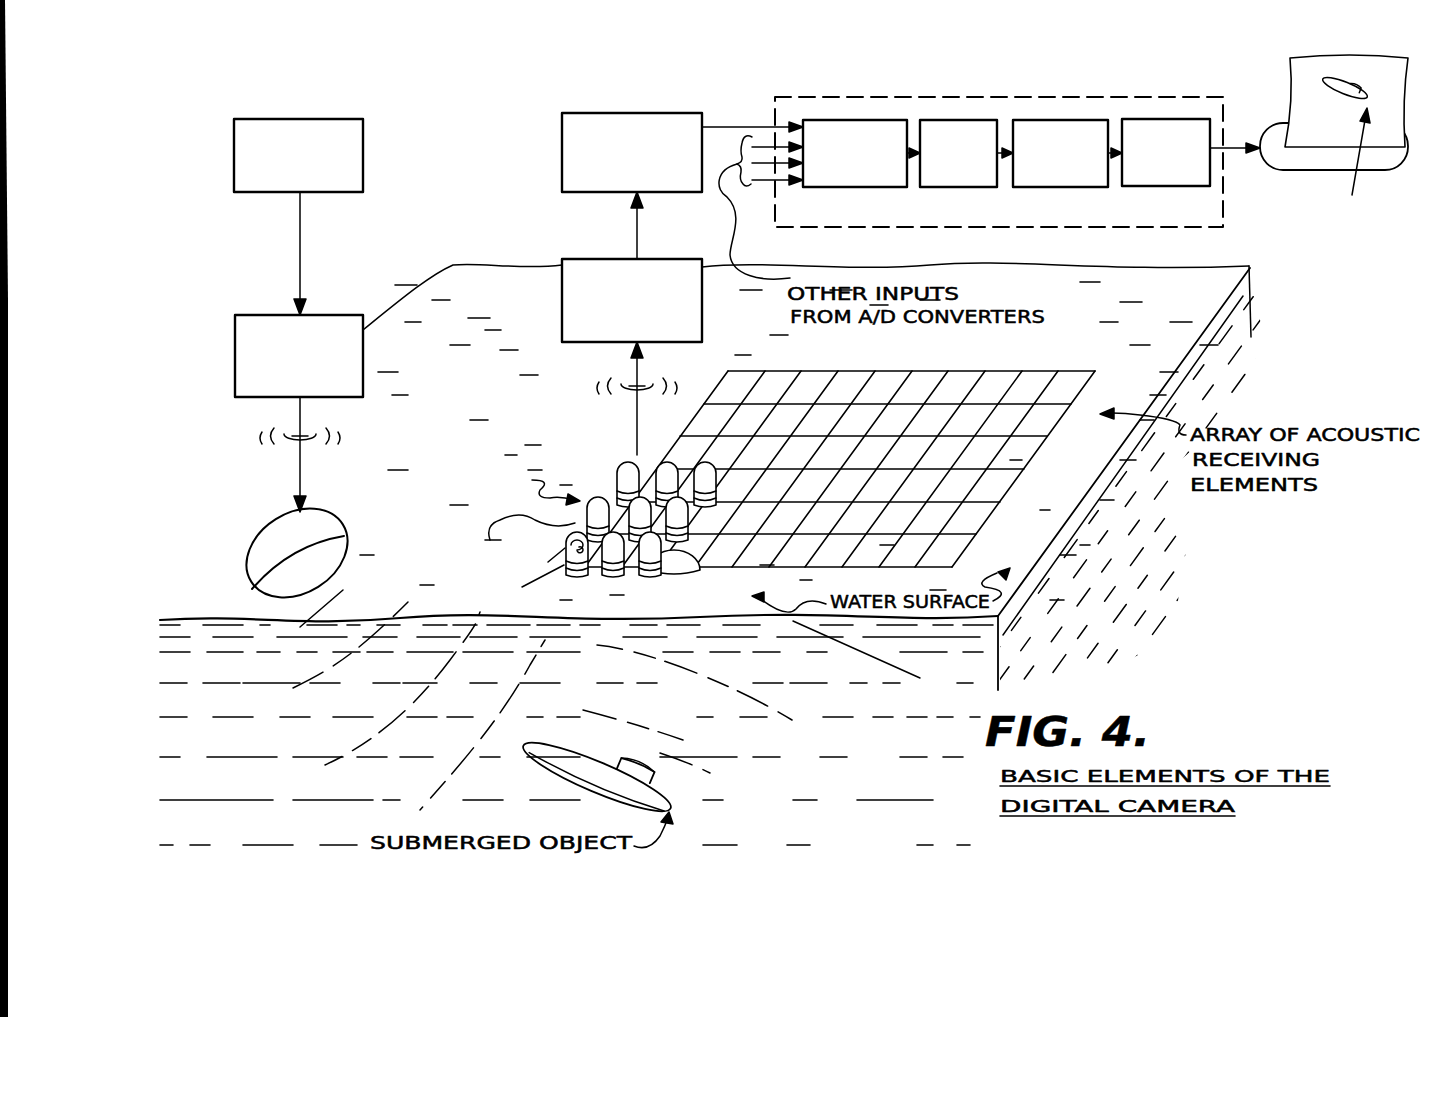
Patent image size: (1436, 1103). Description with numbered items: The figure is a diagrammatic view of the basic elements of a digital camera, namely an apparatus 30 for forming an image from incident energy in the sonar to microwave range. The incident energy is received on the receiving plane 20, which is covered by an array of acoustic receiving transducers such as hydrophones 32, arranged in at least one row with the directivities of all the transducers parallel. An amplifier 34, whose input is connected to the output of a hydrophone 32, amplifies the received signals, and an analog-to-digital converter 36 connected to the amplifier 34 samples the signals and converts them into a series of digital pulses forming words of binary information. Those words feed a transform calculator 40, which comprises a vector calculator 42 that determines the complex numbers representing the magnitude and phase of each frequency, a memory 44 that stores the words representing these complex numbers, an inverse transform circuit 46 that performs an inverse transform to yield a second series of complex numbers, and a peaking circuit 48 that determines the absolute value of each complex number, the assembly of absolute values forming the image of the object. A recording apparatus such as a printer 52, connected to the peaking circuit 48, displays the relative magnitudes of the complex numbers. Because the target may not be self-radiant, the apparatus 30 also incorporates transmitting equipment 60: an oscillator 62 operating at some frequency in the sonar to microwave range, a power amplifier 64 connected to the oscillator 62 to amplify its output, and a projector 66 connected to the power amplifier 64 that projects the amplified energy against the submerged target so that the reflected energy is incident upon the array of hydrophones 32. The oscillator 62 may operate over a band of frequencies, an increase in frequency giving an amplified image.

The receiving plane 20 is at (1008, 372).
The apparatus 30 is at (760, 82).
The hydrophone 32 is at (684, 580).
The amplifier 34 is at (588, 258).
The analog-to-digital converter 36 is at (562, 164).
The transform calculator 40 is at (947, 98).
The vector calculator 42 is at (857, 119).
The memory 44 is at (980, 119).
The inverse transform circuit 46 is at (1079, 120).
The peaking circuit 48 is at (1210, 172).
The printer 52 is at (1268, 110).
The transmitting equipment 60 is at (375, 430).
The oscillator 62 is at (363, 131).
The power amplifier 64 is at (235, 343).
The projector 66 is at (246, 556).